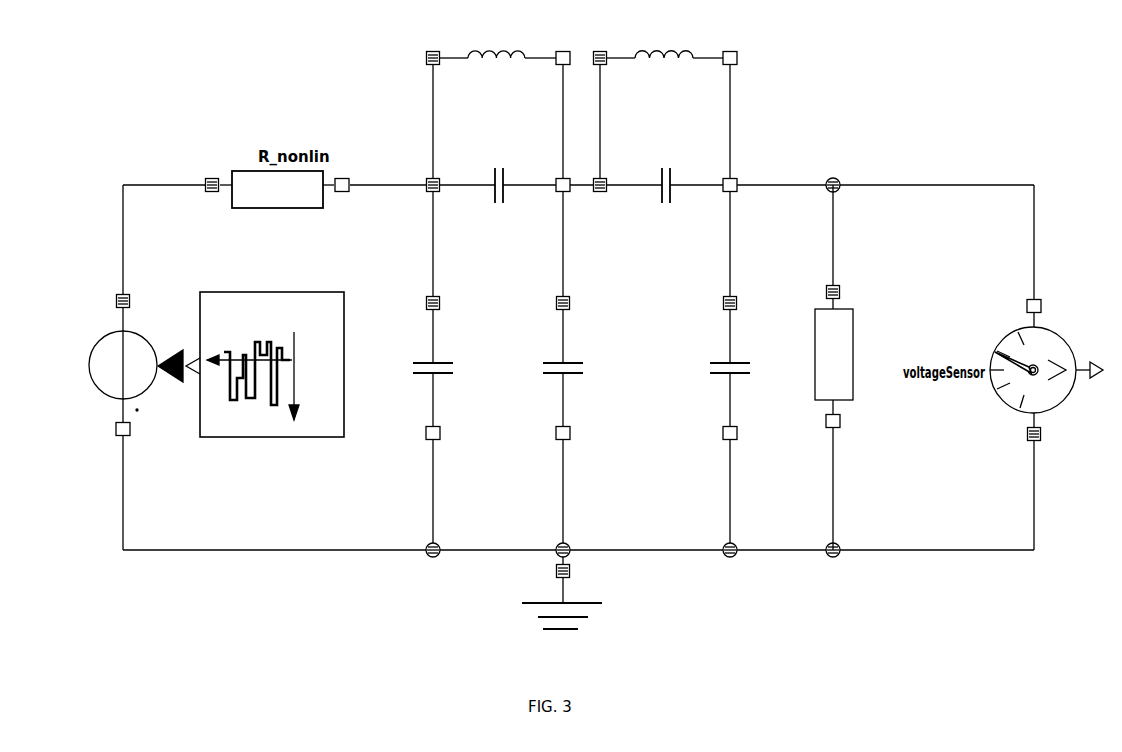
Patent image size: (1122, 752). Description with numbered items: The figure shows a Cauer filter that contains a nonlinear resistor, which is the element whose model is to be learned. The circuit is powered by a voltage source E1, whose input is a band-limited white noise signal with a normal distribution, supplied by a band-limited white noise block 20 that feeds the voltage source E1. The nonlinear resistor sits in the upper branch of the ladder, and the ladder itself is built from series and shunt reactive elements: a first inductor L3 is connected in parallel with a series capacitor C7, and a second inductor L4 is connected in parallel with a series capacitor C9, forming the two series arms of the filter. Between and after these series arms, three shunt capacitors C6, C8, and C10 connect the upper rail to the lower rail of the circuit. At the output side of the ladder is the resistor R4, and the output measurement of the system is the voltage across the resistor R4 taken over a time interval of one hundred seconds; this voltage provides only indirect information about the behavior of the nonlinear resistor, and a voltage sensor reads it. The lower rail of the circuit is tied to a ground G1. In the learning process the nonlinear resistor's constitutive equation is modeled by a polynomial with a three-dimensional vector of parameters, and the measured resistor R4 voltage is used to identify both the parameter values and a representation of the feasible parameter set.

The band limited white noise block 20 is at (272, 376).
The voltage source E1 is at (112, 365).
The inductor L3 is at (499, 71).
The inductor L4 is at (666, 71).
The capacitor C6 is at (433, 368).
The capacitor C7 is at (499, 206).
The capacitor C8 is at (559, 368).
The capacitor C9 is at (666, 206).
The capacitor C10 is at (729, 368).
The resistor R4 is at (833, 357).
The ground G1 is at (562, 615).